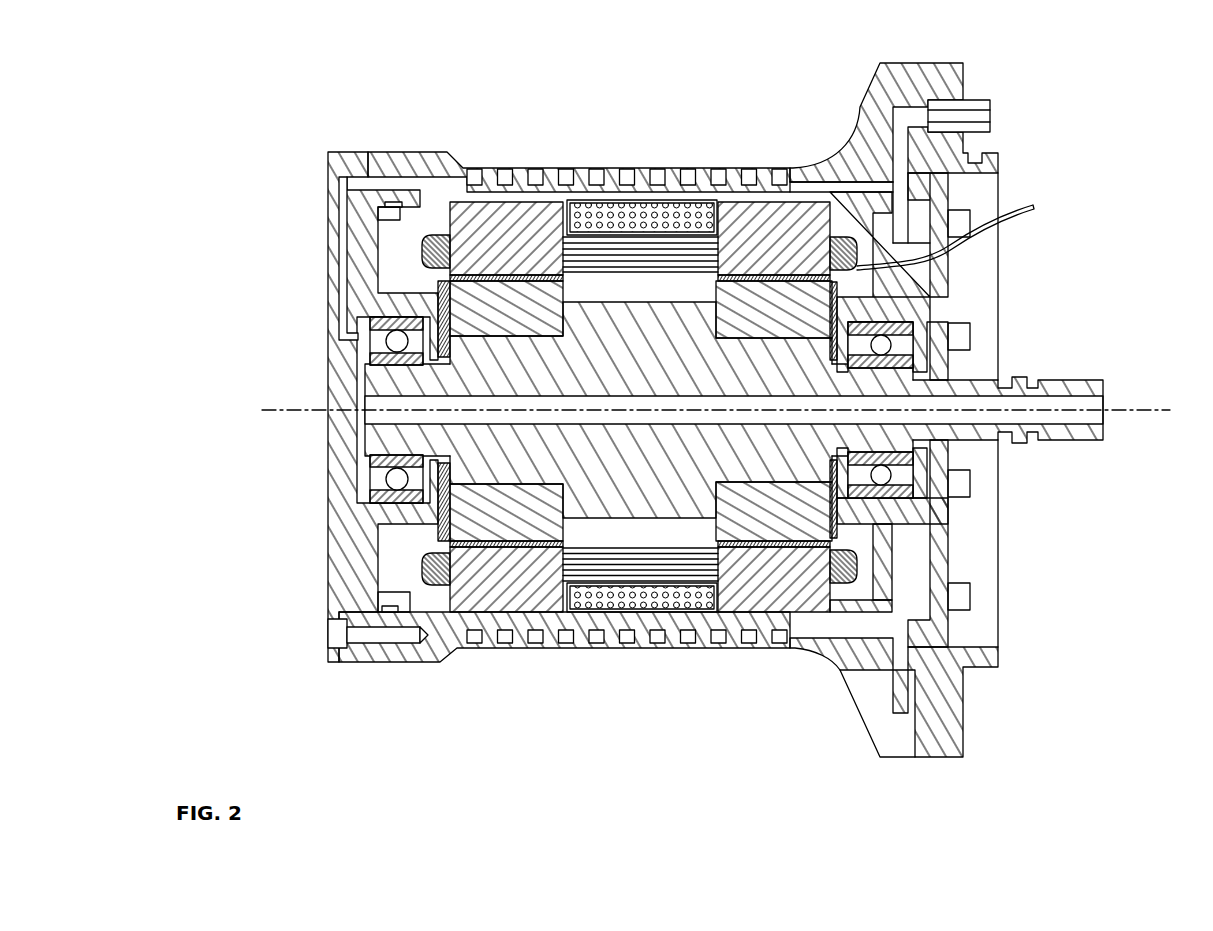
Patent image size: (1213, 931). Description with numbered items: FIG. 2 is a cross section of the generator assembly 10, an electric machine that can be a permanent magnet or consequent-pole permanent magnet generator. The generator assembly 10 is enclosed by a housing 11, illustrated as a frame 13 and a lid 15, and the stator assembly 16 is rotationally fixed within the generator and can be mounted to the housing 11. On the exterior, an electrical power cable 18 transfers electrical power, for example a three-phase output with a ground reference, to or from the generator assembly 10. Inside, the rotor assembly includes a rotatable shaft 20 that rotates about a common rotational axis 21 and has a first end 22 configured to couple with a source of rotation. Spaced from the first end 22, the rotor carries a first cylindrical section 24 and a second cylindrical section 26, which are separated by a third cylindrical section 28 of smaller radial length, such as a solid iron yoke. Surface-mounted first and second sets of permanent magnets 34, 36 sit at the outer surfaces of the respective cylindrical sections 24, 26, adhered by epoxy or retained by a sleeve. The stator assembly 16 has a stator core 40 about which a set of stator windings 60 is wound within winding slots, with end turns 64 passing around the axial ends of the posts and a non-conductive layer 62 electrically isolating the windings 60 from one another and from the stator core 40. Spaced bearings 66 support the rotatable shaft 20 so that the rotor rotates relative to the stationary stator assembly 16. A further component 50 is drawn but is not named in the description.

The generator assembly 10 is at (632, 82).
The housing 11 is at (937, 46).
The frame 13 is at (940, 83).
The lid 15 is at (350, 160).
The stator assembly 16 is at (773, 190).
The electrical power cable 18 is at (1013, 217).
The rotatable shaft 20 is at (992, 420).
The common rotational axis 21 is at (1128, 423).
The first end 22 is at (1097, 362).
The first cylindrical section 24 is at (497, 276).
The second cylindrical section 26 is at (742, 278).
The third cylindrical section 28 is at (678, 300).
The first set of permanent magnets 34 is at (472, 302).
The second set of permanent magnets 36 is at (790, 312).
The stator core 40 is at (522, 590).
The winding 50 is at (612, 200).
The stator windings 60 is at (410, 580).
The non-conductive layer 62 is at (437, 230).
The end turns 64 is at (428, 250).
The bearings 66 is at (390, 342).